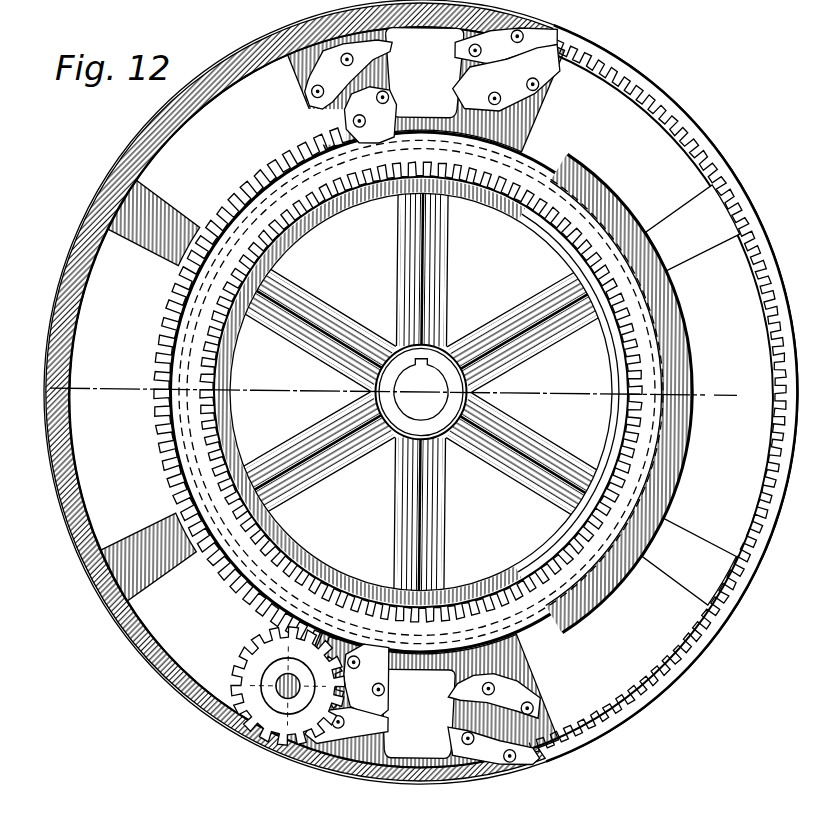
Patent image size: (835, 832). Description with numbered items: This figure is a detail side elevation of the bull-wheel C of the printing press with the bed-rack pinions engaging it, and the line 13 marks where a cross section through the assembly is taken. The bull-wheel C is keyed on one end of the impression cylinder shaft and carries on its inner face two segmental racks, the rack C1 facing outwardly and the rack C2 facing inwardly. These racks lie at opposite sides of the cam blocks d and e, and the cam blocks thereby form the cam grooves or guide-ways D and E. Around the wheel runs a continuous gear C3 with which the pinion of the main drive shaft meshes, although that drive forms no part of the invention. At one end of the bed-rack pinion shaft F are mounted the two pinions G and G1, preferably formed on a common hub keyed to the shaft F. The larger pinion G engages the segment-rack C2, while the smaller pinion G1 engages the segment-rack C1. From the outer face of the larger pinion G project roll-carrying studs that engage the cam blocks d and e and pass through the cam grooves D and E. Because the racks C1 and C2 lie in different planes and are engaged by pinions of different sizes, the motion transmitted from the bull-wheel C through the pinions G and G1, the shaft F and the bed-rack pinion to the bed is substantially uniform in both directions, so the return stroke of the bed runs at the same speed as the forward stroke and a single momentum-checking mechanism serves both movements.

The bull-wheel C is at (268, 46).
The segmental rack C1 is at (251, 178).
The segmental rack C2 is at (695, 168).
The continuous gear C3 is at (498, 208).
The cam block d is at (388, 58).
The cam groove D is at (506, 69).
The cam block e is at (485, 753).
The cam groove E is at (463, 718).
The pinion G is at (243, 648).
The pinion G1 is at (317, 681).
The bed-rack pinion shaft F is at (276, 690).
The section line 13 is at (731, 371).